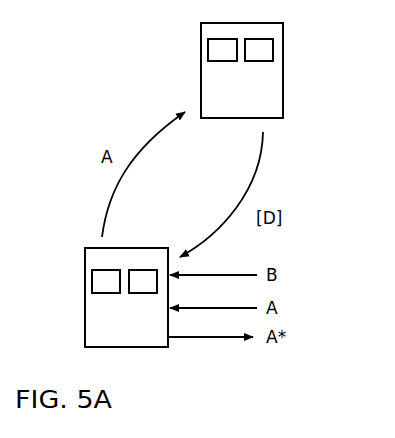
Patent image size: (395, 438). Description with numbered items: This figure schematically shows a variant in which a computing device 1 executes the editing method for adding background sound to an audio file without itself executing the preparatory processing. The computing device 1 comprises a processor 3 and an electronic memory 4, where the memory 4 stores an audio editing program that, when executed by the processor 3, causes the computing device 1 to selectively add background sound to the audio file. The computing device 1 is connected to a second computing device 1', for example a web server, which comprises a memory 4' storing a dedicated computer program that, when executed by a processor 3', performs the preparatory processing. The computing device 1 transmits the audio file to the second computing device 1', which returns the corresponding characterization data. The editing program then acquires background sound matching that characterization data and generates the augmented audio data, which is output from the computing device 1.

The computing device 1 is at (96, 297).
The processor 3 is at (75, 282).
The electronic memory 4 is at (147, 248).
The second computing device 1' is at (209, 70).
The processor 3' is at (190, 50).
The memory 4' is at (299, 50).